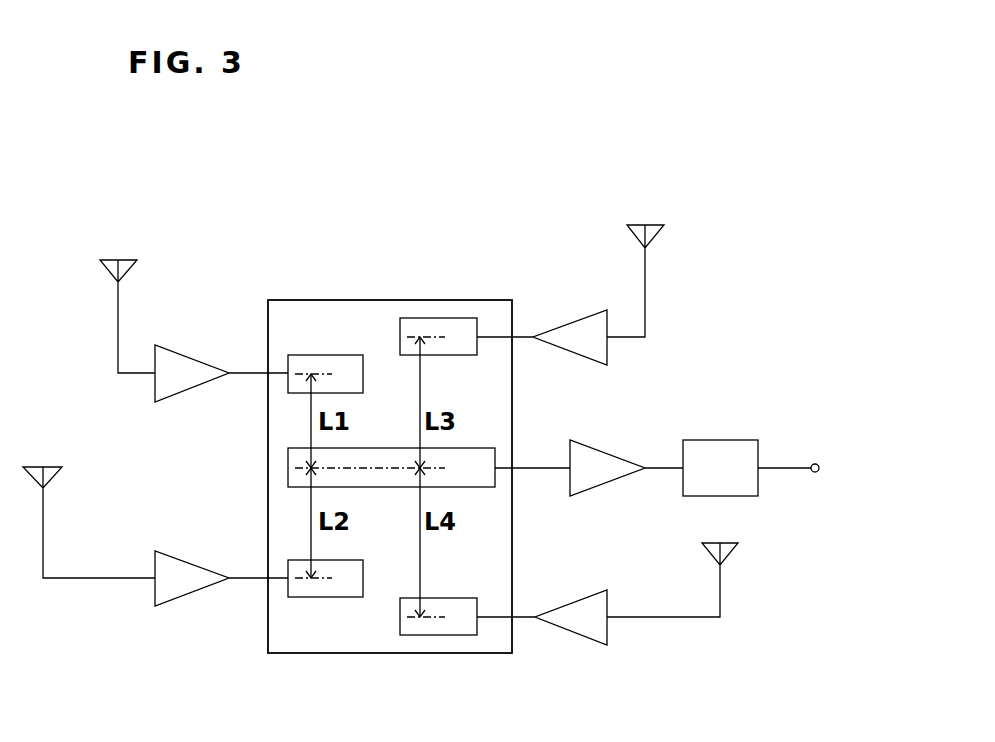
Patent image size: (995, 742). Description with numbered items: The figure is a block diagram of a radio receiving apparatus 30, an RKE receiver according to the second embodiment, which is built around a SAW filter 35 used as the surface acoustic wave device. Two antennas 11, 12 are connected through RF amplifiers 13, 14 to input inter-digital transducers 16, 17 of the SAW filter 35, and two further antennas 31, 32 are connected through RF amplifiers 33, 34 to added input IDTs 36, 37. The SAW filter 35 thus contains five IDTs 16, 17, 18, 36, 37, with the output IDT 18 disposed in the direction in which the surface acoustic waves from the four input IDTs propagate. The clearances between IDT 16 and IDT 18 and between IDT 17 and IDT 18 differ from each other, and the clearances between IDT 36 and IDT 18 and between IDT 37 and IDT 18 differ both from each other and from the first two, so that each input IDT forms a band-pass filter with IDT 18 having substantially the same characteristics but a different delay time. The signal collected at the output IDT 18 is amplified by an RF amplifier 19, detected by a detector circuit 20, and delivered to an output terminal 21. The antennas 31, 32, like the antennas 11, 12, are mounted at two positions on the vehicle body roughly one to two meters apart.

The antenna 11 is at (123, 262).
The antenna 12 is at (50, 470).
The RF amplifier 13 is at (182, 375).
The RF amplifier 14 is at (182, 578).
The inter-digital transducer 16 is at (326, 360).
The inter-digital transducer 17 is at (316, 597).
The inter-digital transducer 18 is at (478, 478).
The RF amplifier 19 is at (598, 468).
The detector circuit 20 is at (715, 455).
The output terminal 21 is at (815, 455).
The radio receiving apparatus 30 is at (537, 246).
The antenna 31 is at (663, 235).
The antenna 32 is at (735, 553).
The RF amplifier 33 is at (597, 352).
The RF amplifier 34 is at (597, 628).
The SAW filter 35 is at (307, 300).
The inter-digital transducer 36 is at (423, 318).
The inter-digital transducer 37 is at (433, 635).